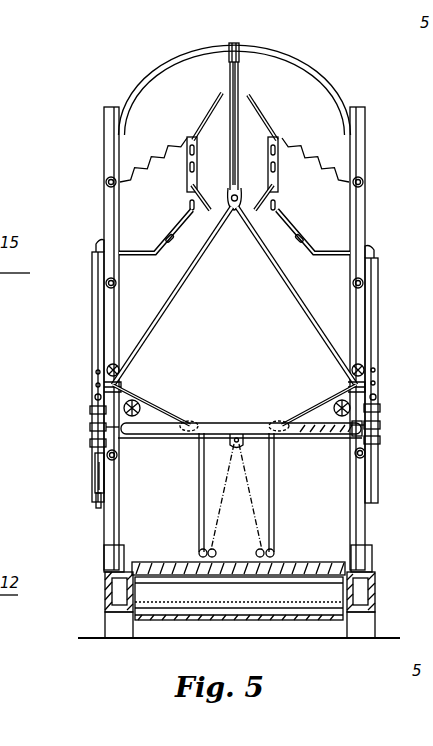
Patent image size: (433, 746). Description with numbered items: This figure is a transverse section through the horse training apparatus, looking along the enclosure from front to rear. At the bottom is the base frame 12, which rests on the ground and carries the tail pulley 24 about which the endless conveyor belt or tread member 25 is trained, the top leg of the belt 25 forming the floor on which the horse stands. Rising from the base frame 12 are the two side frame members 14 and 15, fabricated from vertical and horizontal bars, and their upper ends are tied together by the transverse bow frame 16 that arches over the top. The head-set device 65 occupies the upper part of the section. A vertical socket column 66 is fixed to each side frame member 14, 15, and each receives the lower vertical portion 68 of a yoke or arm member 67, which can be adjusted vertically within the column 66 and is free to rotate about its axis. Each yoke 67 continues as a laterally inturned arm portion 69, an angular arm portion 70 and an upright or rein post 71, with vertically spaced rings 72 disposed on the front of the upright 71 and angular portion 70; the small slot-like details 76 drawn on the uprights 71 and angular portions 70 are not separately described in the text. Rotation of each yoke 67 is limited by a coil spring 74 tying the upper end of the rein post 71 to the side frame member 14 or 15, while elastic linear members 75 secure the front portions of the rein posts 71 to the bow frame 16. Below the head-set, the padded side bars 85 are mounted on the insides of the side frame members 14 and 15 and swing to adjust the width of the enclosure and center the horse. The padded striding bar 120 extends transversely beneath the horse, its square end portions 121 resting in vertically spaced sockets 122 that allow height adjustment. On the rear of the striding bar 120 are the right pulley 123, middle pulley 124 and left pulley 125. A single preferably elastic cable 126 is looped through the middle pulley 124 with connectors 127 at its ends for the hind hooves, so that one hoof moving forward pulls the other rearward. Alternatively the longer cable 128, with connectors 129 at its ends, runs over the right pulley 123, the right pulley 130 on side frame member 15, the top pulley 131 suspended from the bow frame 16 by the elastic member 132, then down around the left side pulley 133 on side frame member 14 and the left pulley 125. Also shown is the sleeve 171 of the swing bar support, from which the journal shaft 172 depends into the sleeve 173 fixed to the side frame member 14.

The base frame 12 is at (104, 596).
The side frame member 14 is at (365, 218).
The side frame member 15 is at (104, 215).
The transverse bow frame 16 is at (163, 70).
The tail pulley 24 is at (327, 601).
The endless conveyor belt or tread member 25 is at (326, 562).
The head-set device 65 is at (284, 103).
The vertical socket column 66 is at (378, 328).
The yoke or arm member 67 is at (295, 262).
The lower vertical portion 68 is at (98, 250).
The laterally inturned arm portion 69 is at (140, 258).
The angular arm portion 70 is at (168, 258).
The upright or rein post 71 is at (186, 158).
The rings 72 is at (172, 233).
The coil spring 74 is at (156, 163).
The elastic linear member 75 is at (250, 105).
The slot 76 is at (189, 198).
The padded side bar 85 is at (150, 420).
The padded striding bar 120 is at (150, 434).
The square cross-sectional end portion 121 is at (380, 414).
The vertically spaced sockets 122 is at (88, 427).
The right pulley or sheave 123 is at (187, 420).
The middle pulley 124 is at (243, 441).
The left pulley 125 is at (280, 420).
The cable 126 is at (256, 485).
The connectors 127 is at (270, 575).
The cable 128 is at (185, 288).
The connectors 129 is at (201, 550).
The right pulley 130 is at (122, 380).
The top pulley 131 is at (234, 210).
The elastic member 132 is at (238, 80).
The left side pulley 133 is at (348, 385).
The sleeve 171 is at (94, 456).
The journal shaft 172 is at (95, 505).
The sleeve 173 is at (93, 484).